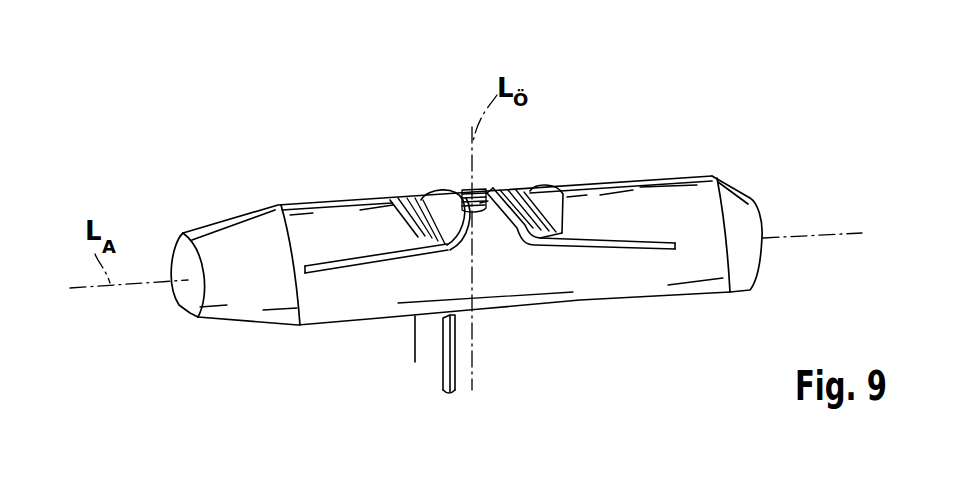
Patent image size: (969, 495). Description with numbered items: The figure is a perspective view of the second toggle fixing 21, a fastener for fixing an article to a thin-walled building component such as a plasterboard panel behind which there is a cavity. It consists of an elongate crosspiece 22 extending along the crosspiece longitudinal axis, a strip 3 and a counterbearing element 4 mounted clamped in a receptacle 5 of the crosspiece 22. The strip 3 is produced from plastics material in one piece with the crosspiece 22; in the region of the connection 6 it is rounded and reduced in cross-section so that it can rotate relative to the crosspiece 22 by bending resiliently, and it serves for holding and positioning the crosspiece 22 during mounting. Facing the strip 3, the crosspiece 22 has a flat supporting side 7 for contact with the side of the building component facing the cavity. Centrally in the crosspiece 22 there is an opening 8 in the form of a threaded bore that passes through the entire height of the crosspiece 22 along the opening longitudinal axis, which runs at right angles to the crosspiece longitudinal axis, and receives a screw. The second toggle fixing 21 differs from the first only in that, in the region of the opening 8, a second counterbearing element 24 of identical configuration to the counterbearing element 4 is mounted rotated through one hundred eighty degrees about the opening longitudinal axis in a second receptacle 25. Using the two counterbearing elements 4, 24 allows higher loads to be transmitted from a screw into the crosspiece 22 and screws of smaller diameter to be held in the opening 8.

The strip 3 is at (441, 365).
The counterbearing element 4 is at (423, 213).
The receptacle 5 is at (347, 262).
The connection 6 is at (432, 347).
The flat supporting side 7 is at (560, 309).
The opening 8 is at (478, 204).
The second toggle fixing 21 is at (589, 146).
The crosspiece 22 is at (628, 203).
The second counterbearing element 24 is at (518, 199).
The second receptacle 25 is at (647, 240).